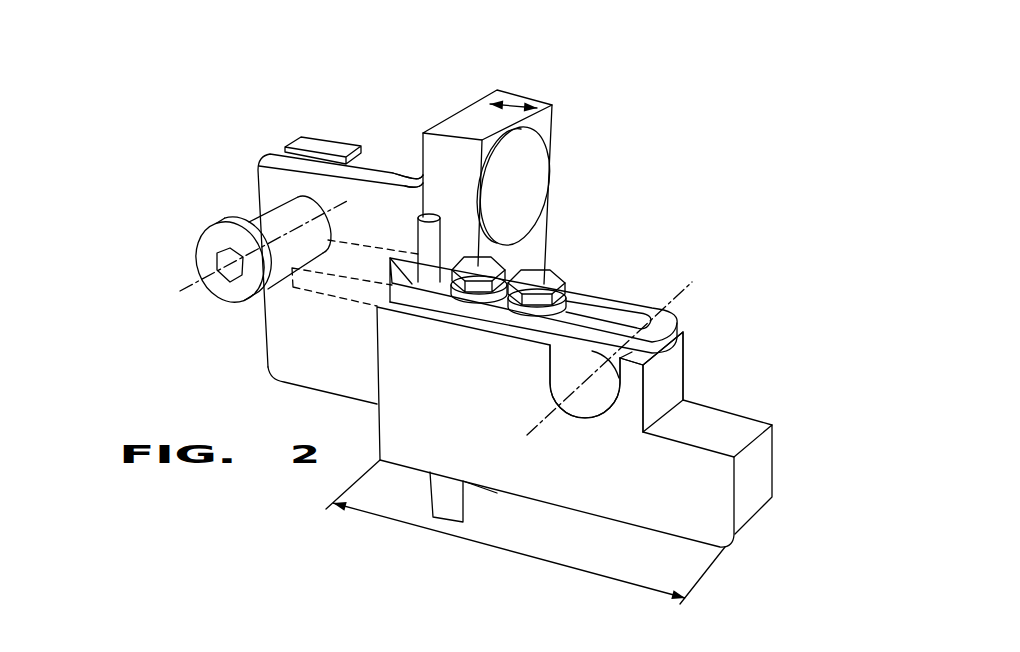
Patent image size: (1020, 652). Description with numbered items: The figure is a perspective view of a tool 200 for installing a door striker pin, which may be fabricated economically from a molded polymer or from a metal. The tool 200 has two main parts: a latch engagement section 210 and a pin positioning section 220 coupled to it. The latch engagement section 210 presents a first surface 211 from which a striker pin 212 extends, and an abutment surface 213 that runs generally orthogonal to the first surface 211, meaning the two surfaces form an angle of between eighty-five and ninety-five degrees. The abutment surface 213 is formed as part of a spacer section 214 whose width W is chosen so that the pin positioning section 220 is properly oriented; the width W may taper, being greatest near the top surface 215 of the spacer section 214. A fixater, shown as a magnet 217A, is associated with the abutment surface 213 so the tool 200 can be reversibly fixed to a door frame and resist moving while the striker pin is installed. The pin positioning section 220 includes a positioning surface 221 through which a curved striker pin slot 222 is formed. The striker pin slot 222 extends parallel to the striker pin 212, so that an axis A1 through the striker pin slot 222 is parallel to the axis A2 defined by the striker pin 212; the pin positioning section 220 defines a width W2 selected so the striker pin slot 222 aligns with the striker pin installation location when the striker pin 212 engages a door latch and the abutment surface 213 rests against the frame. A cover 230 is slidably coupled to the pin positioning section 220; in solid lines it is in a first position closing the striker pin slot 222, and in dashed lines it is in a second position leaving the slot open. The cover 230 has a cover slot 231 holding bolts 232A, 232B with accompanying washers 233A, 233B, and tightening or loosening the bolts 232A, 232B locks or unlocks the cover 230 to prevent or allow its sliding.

The tool 200 is at (288, 108).
The latch engagement section 210 is at (384, 165).
The first surface 211 is at (412, 232).
The striker pin 212 is at (218, 239).
The abutment surface 213 is at (553, 123).
The spacer section 214 is at (482, 140).
The top surface 215 is at (453, 126).
The magnet 217A is at (535, 170).
The pin positioning section 220 is at (693, 351).
The positioning surface 221 is at (482, 452).
The striker pin slot 222 is at (597, 398).
The cover 230 is at (638, 310).
The cover slot 231 is at (684, 335).
The bolt 232A is at (480, 278).
The bolt 232B is at (535, 300).
The washer 233A is at (510, 277).
The washer 233B is at (562, 295).
The width W is at (513, 104).
The width W2 is at (525, 532).
The axis A1 is at (553, 413).
The axis A2 is at (188, 297).